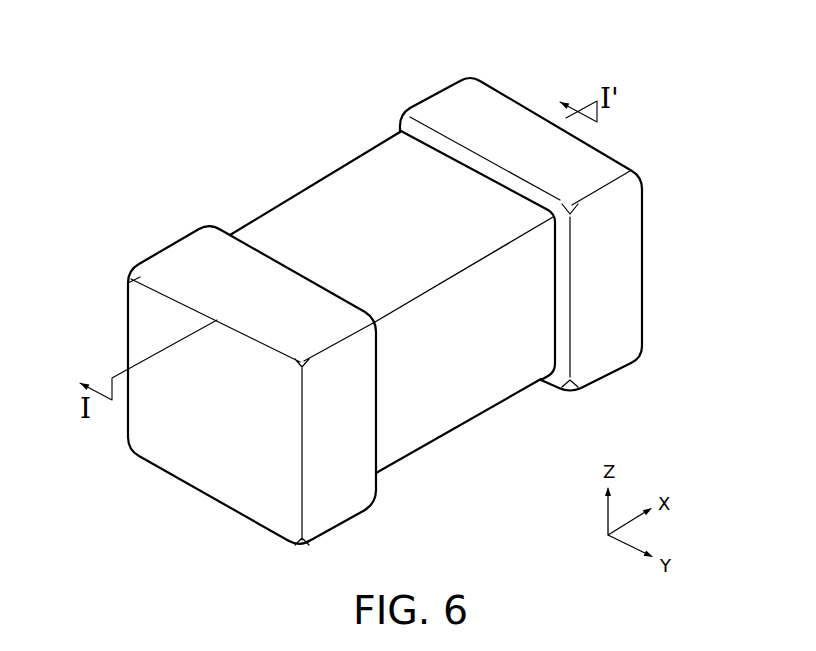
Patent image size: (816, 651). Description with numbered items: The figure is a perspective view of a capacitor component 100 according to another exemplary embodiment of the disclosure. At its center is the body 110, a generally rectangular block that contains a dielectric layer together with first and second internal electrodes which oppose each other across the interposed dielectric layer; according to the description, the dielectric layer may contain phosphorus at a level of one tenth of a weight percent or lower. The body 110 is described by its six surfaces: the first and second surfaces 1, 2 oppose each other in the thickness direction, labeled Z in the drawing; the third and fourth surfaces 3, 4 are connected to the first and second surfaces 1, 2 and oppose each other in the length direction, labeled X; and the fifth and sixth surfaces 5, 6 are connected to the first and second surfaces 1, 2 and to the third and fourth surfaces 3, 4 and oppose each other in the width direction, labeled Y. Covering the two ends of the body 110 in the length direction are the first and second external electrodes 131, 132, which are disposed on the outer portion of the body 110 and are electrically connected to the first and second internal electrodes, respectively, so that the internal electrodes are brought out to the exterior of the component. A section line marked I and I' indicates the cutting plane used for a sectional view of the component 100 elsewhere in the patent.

The capacitor component 100 is at (187, 85).
The body 110 is at (385, 287).
The first external electrode 131 is at (252, 359).
The second external electrode 132 is at (553, 208).
The first surface 1 is at (427, 398).
The second surface 2 is at (402, 188).
The third surface 3 is at (221, 440).
The fourth surface 4 is at (590, 248).
The fifth surface 5 is at (486, 368).
The sixth surface 6 is at (348, 213).